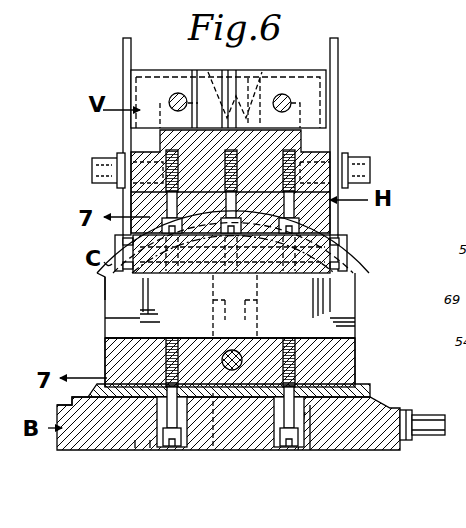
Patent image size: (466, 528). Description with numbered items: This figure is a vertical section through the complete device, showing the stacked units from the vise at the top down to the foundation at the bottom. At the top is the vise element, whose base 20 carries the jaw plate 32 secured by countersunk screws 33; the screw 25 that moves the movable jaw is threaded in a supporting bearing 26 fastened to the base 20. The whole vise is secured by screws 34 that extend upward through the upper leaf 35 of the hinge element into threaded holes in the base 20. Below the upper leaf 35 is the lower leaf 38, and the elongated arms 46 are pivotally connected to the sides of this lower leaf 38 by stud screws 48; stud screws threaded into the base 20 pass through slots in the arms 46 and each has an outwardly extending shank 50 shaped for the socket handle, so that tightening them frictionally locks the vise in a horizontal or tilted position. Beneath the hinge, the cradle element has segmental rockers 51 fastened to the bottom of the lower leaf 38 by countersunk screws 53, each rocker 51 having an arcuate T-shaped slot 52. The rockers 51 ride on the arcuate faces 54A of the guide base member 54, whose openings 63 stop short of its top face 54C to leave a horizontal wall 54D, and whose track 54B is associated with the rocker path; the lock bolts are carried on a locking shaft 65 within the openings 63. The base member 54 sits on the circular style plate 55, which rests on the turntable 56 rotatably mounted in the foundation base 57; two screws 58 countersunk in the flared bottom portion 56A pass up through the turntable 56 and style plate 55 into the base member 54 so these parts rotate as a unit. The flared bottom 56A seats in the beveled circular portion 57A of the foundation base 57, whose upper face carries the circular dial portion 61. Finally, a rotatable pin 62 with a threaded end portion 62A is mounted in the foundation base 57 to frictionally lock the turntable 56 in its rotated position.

The elongated arms 46 is at (122, 50).
The jaw plate 32 is at (142, 86).
The countersunk screws 33 is at (177, 93).
The supporting bearing 26 is at (215, 73).
The screw 25 is at (281, 94).
The base 20 is at (157, 188).
The screws 34 is at (290, 210).
The upper leaf 35 is at (313, 223).
The shank 50 is at (100, 160).
The stud screws 48 is at (115, 241).
The rockers 51 is at (97, 273).
The arcuate slot 52 is at (369, 276).
The screws 53 is at (223, 291).
The arcuate track 54B is at (272, 311).
The lower leaf 38 is at (271, 296).
The openings 63 is at (290, 334).
The guide base member 54 is at (110, 351).
The arcuate faces 54A is at (127, 308).
The top face 54C is at (352, 338).
The locking shaft 65 is at (232, 350).
The style plate 55 is at (372, 388).
The foundation base 57 is at (70, 438).
The turntable 56 is at (300, 413).
The circular dial portion 61 is at (60, 404).
The beveled circular portion 57A is at (135, 448).
The flared bottom portion 56A is at (150, 448).
The horizontal wall portion 54D is at (213, 445).
The screws 58 is at (171, 447).
The end portion 62A is at (410, 410).
The pins 62 is at (440, 425).